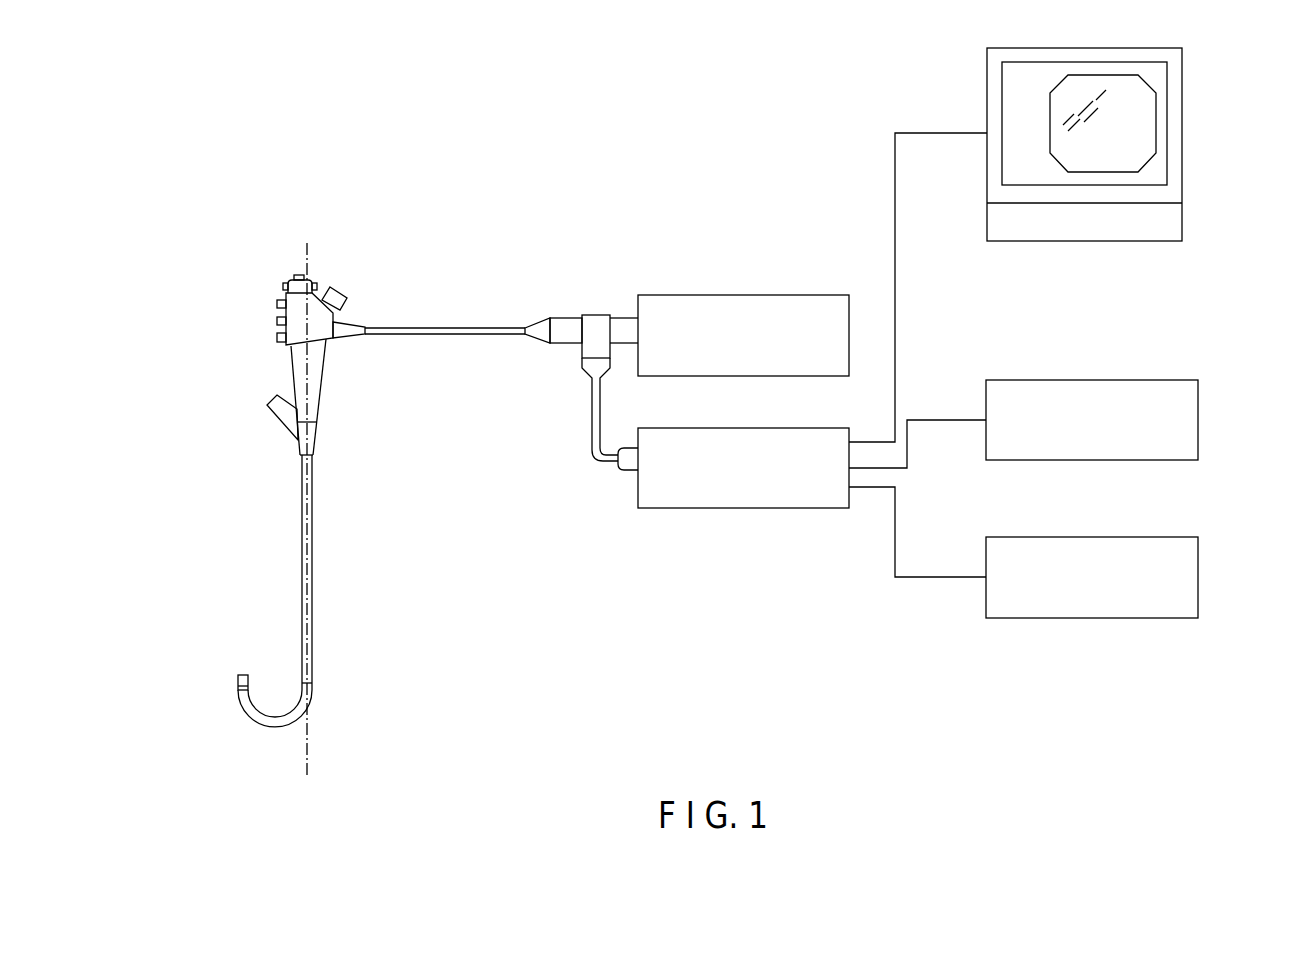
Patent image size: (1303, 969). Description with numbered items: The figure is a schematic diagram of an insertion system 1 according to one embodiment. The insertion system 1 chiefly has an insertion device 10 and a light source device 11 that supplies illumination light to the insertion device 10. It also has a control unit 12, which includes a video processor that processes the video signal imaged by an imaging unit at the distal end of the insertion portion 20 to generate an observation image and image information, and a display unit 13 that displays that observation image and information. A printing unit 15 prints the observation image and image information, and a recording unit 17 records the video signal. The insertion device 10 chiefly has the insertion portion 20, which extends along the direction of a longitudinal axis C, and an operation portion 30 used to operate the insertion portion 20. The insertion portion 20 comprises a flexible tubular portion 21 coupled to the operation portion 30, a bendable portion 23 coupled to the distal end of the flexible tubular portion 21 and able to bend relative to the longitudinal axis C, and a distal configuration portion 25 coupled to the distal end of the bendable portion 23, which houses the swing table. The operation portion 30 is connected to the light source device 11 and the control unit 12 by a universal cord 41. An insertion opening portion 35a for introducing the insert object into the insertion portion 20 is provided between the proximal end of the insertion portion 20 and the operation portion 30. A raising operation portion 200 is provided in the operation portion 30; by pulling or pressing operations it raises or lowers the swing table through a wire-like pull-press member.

The insertion system 1 is at (712, 176).
The insertion device 10 is at (263, 236).
The light source device 11 is at (820, 295).
The control unit 12 is at (820, 428).
The display unit 13 is at (1182, 80).
The printing unit 15 is at (1198, 405).
The recording unit 17 is at (1198, 562).
The insertion portion 20 is at (236, 539).
The flexible tubular portion 21 is at (314, 651).
The bendable portion 23 is at (260, 729).
The distal configuration portion 25 is at (237, 680).
The operation portion 30 is at (228, 357).
The insertion opening portion 35a is at (268, 400).
The universal cord 41 is at (470, 326).
The raising operation portion 200 is at (338, 286).
The longitudinal axis C is at (316, 740).